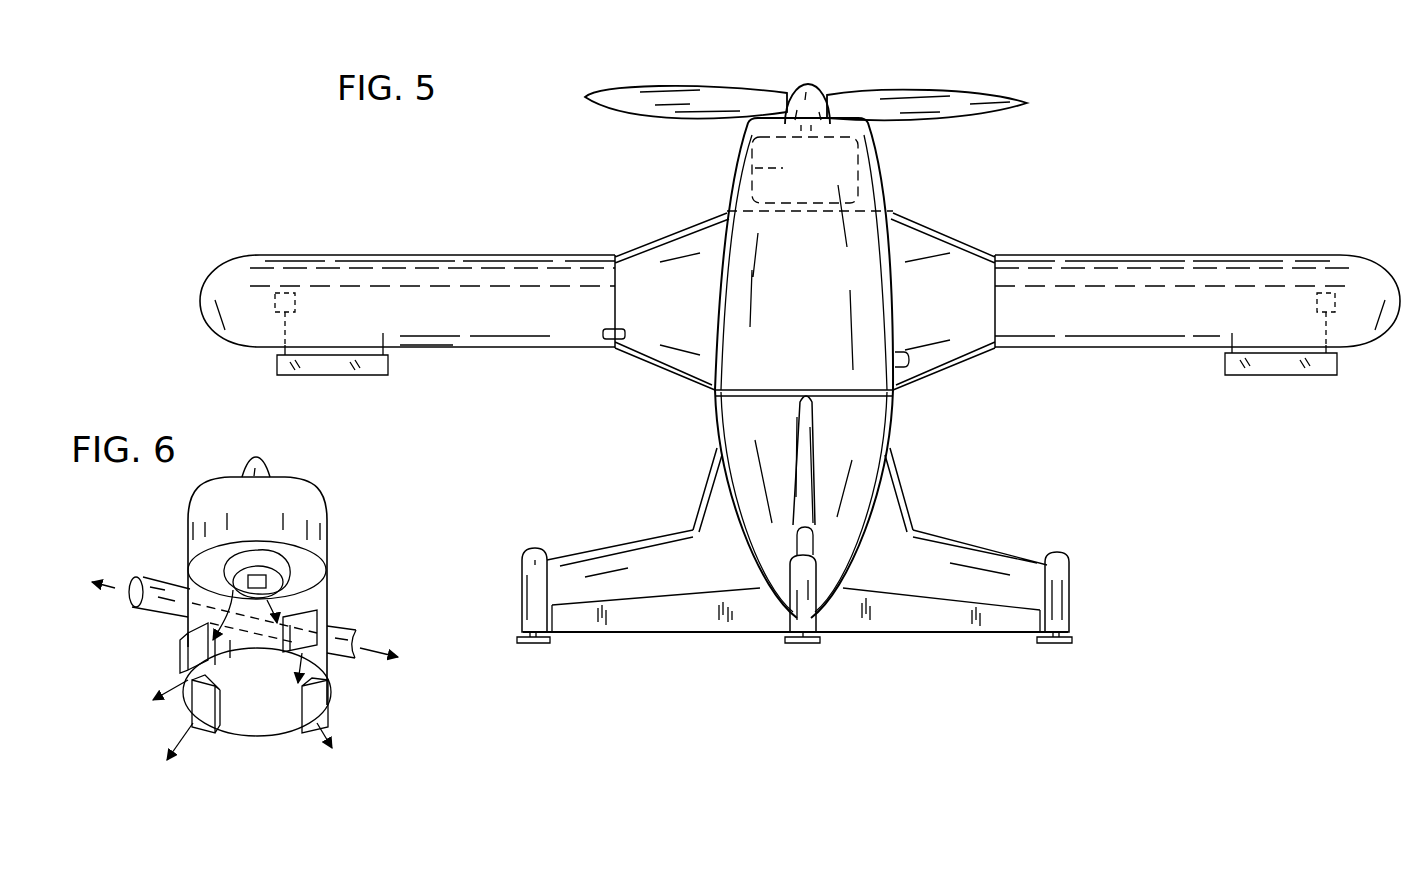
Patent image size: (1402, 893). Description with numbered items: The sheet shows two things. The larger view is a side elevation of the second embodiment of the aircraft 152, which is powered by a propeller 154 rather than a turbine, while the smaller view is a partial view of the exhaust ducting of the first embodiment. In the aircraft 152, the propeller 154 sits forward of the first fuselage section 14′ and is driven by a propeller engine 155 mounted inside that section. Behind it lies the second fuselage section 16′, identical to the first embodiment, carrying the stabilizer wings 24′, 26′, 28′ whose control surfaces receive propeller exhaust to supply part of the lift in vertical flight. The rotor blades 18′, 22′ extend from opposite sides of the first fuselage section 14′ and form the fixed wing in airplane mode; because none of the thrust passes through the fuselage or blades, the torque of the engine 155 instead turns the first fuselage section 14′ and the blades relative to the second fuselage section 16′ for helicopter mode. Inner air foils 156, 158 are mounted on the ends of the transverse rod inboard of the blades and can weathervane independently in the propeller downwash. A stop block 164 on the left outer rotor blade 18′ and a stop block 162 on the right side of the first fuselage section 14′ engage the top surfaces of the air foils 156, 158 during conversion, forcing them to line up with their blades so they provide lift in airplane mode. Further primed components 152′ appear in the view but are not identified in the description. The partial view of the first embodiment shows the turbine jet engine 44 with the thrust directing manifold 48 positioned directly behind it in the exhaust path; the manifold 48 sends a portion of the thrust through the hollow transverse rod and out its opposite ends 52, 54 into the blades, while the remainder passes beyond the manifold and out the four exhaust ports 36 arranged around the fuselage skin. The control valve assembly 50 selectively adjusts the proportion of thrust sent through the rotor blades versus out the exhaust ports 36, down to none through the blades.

In FIG. 5, the propeller 154 is at (712, 100).
In FIG. 5, the aircraft 152 is at (1082, 116).
In FIG. 5, the propeller engine 155 is at (747, 168).
In FIG. 5, the first fuselage section 14′ is at (863, 237).
In FIG. 5, the inner air foil 158 is at (937, 247).
In FIG. 5, the inner air foil 156 is at (673, 270).
In FIG. 5, the rotor blade 18′ is at (407, 275).
In FIG. 5, the rotor blade 22′ is at (1193, 273).
In FIG. 5, the stop block 164 is at (610, 339).
In FIG. 5, the stop block 162 is at (907, 360).
In FIG. 5, the stabilizer wing 24′ is at (807, 500).
In FIG. 5, the stabilizer wing 26′ is at (630, 565).
In FIG. 5, the stabilizer wing 28′ is at (972, 558).
In FIG. 5, the second fuselage section 16′ is at (867, 460).
In FIG. 5, the landing gear 152′ is at (532, 567).
In FIG. 6, the turbine jet engine 44 is at (302, 502).
In FIG. 6, the thrust directing manifold 48 is at (225, 572).
In FIG. 6, the control valve assembly 50 is at (273, 570).
In FIG. 6, the rod end 52 is at (125, 603).
In FIG. 6, the rod end 54 is at (360, 655).
In FIG. 6, the exhaust ports 36 is at (323, 622).